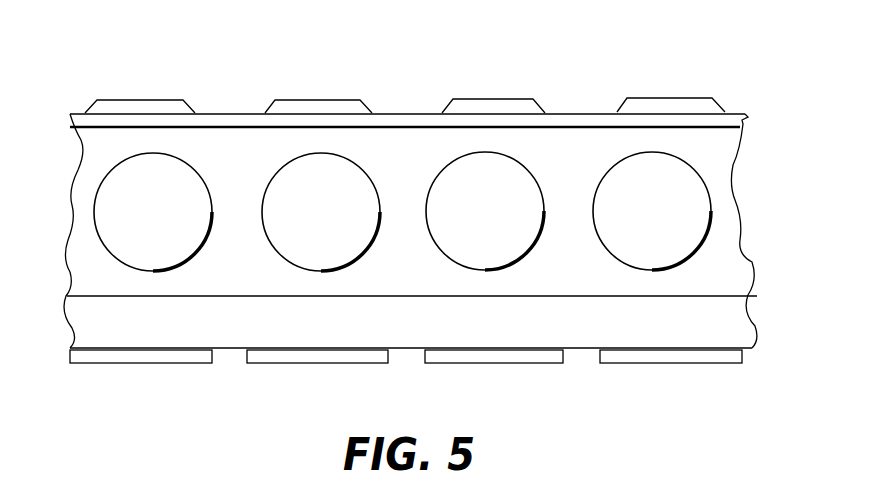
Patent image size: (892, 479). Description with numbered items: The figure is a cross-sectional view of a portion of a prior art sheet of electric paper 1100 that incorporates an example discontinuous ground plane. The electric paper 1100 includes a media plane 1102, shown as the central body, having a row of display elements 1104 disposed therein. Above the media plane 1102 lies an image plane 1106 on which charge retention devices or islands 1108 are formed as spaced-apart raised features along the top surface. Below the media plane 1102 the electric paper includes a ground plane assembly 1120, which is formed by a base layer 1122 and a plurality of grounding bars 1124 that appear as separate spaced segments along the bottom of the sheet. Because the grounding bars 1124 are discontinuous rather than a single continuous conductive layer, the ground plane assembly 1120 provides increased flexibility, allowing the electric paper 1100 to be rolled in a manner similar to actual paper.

The electric paper 1100 is at (133, 56).
The media plane 1102 is at (737, 268).
The display elements 1104 is at (182, 224).
The image plane 1106 is at (727, 121).
The charge retention devices 1108 is at (298, 100).
The ground plane assembly 1120 is at (818, 397).
The base layer 1122 is at (745, 332).
The grounding bars 1124 is at (295, 358).